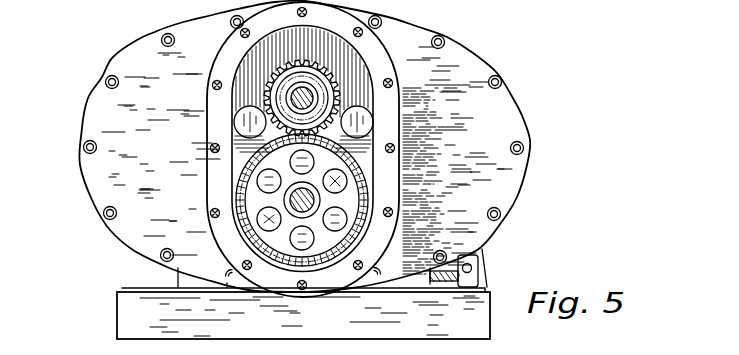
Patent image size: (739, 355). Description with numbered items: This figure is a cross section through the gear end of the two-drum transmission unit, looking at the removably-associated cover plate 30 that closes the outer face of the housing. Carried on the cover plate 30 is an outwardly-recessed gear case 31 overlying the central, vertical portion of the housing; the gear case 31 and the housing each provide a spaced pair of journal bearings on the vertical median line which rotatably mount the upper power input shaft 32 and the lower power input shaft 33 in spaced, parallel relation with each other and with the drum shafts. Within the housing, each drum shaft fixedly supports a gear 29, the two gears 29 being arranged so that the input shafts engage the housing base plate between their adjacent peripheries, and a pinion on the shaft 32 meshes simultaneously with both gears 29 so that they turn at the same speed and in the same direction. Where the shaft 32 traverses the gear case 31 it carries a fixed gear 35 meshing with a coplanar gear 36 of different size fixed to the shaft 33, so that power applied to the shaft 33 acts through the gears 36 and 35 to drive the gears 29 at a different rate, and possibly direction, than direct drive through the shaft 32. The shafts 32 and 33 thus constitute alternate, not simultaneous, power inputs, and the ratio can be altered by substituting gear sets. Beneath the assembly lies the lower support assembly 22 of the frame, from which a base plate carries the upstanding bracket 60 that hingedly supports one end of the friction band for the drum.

The lower support assembly 22 is at (303, 313).
The gear 29 is at (262, 97).
The cover plate 30 is at (505, 108).
The gear case 31 is at (217, 72).
The upper power input shaft 32 is at (300, 98).
The lower power input shaft 33 is at (299, 207).
The gear 35 is at (318, 62).
The gear 36 is at (322, 250).
The bracket 60 is at (485, 270).